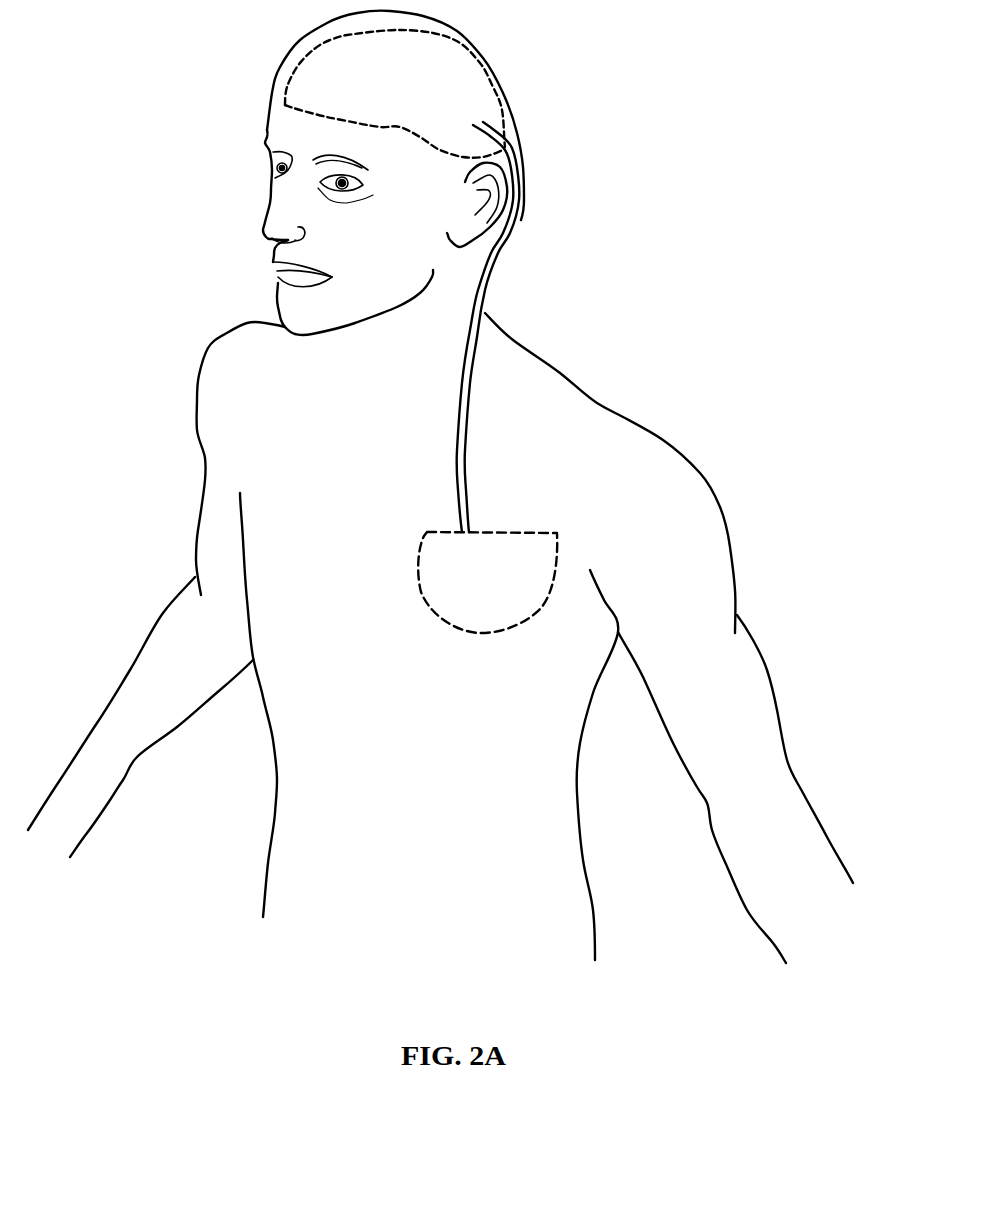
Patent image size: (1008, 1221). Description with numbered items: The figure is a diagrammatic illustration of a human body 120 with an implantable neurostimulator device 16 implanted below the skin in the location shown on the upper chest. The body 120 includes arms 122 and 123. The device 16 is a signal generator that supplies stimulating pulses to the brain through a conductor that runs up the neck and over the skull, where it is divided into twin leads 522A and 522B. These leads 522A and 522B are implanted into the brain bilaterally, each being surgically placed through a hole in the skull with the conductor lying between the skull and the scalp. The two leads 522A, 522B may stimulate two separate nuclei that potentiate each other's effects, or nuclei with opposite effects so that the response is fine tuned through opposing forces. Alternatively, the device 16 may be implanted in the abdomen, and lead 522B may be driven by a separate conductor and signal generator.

The human body 120 is at (451, 487).
The implantable neurostimulator device 16 is at (537, 549).
The lead 522A is at (499, 252).
The lead 522B is at (479, 291).
The arm 122 is at (185, 526).
The arm 123 is at (780, 666).